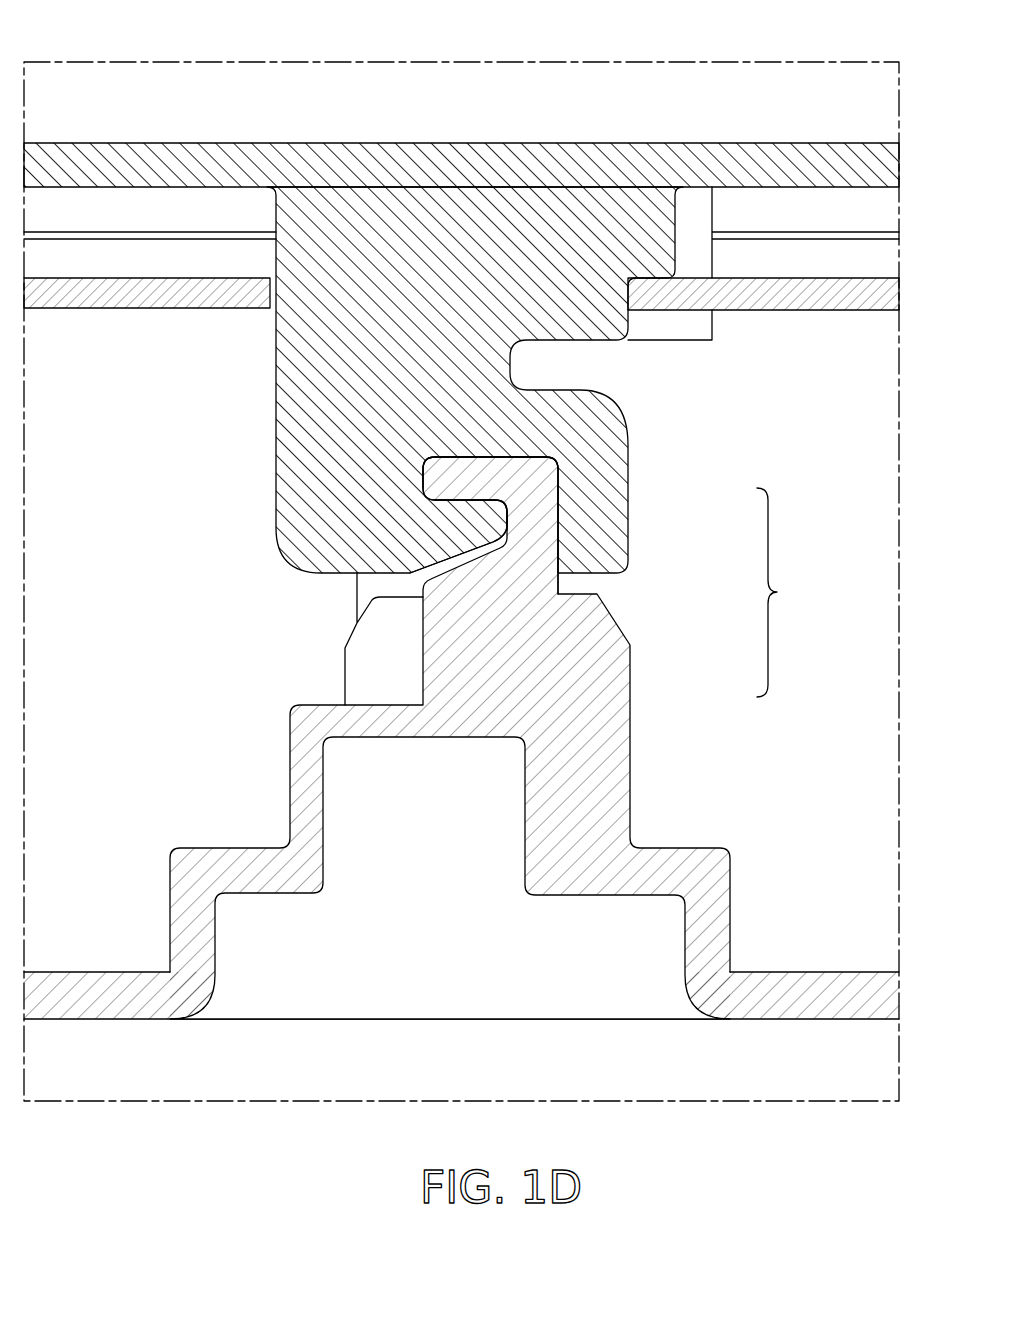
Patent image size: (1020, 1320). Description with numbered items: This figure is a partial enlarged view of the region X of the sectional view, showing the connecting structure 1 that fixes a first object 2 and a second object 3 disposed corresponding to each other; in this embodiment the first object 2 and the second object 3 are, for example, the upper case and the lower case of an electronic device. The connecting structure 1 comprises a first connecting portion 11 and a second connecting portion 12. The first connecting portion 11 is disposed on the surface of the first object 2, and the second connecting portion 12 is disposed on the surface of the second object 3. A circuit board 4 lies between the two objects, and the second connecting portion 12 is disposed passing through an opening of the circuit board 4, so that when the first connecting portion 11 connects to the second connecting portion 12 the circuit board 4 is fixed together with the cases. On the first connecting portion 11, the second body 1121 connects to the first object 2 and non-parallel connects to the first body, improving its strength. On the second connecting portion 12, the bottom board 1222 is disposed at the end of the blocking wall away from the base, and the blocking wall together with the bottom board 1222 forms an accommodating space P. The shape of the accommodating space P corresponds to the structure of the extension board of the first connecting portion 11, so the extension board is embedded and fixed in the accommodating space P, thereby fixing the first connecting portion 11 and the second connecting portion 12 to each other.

The region X is at (207, 62).
The connecting structure 1 is at (776, 592).
The first object 2 is at (781, 170).
The second object 3 is at (817, 1005).
The circuit board 4 is at (790, 300).
The first connecting portion 11 is at (628, 488).
The second connecting portion 12 is at (628, 668).
The second body 1121 is at (450, 530).
The bottom board 1222 is at (458, 483).
The accommodating space P is at (503, 522).